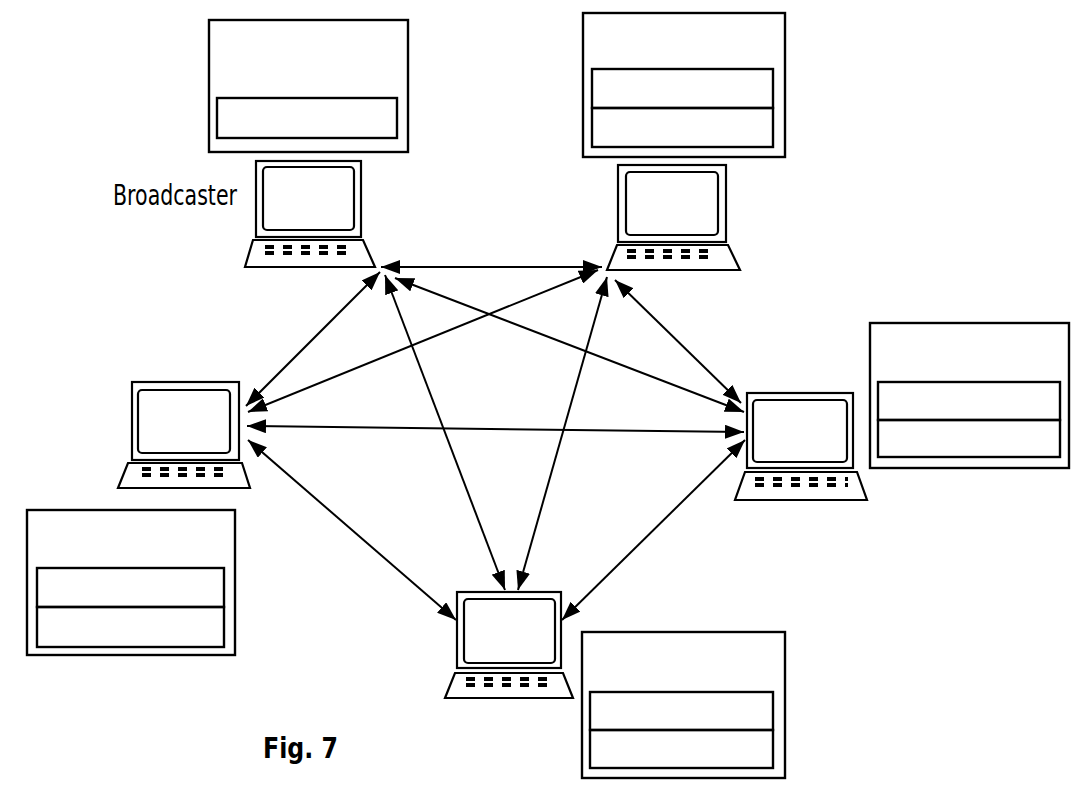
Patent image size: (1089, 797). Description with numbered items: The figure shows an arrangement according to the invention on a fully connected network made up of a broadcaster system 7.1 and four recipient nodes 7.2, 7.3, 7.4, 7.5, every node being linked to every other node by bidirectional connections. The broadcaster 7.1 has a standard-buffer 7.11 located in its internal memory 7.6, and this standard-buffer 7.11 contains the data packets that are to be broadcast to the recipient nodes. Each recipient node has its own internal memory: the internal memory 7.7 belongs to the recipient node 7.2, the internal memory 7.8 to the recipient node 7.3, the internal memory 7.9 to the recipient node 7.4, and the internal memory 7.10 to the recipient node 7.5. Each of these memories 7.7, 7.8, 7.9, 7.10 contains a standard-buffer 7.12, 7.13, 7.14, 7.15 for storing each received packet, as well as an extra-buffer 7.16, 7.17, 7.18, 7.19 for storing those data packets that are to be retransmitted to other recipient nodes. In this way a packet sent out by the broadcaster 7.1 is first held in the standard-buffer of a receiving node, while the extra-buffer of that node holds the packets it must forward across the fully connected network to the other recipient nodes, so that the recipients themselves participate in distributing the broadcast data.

The broadcaster system 7.1 is at (343, 202).
The recipient node 7.2 is at (143, 415).
The recipient node 7.3 is at (470, 647).
The recipient node 7.4 is at (812, 405).
The recipient node 7.5 is at (637, 200).
The internal memory 7.6 is at (352, 86).
The internal memory 7.7 is at (174, 582).
The internal memory 7.8 is at (730, 705).
The internal memory 7.9 is at (969, 402).
The internal memory 7.10 is at (729, 85).
The standard-buffer 7.11 is at (390, 118).
The standard-buffer 7.12 is at (220, 593).
The standard-buffer 7.13 is at (770, 717).
The standard-buffer 7.14 is at (1052, 422).
The standard-buffer 7.15 is at (772, 95).
The extra-buffer 7.16 is at (220, 637).
The extra-buffer 7.17 is at (770, 758).
The extra-buffer 7.18 is at (957, 452).
The extra-buffer 7.19 is at (772, 135).